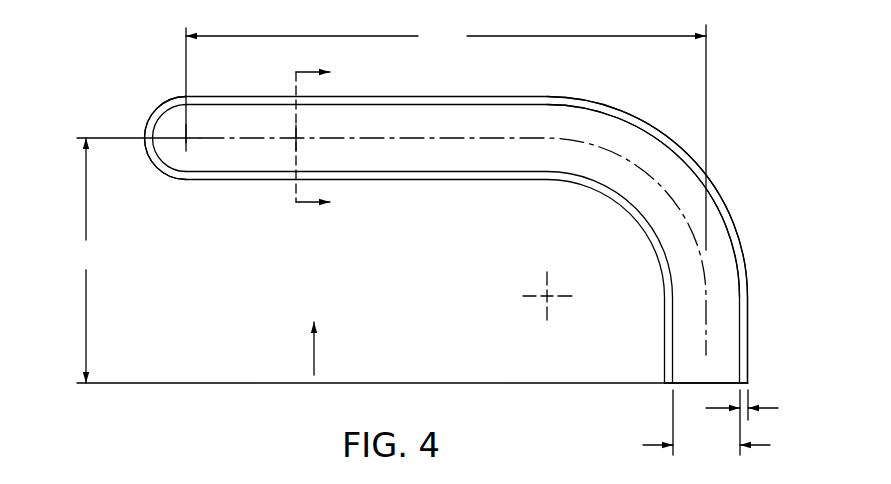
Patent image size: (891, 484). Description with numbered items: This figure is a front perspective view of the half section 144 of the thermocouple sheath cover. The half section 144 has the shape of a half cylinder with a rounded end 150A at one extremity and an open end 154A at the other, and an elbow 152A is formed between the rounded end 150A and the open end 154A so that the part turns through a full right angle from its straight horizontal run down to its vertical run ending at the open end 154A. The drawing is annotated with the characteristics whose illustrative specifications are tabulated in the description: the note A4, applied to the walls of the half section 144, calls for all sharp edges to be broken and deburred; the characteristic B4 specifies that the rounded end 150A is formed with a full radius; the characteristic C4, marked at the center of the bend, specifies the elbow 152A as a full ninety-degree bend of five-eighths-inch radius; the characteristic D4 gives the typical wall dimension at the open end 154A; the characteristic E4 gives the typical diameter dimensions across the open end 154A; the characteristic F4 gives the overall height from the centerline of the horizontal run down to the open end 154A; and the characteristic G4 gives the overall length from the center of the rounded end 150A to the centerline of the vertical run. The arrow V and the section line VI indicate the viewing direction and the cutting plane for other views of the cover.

The half section 144 is at (795, 176).
The break and deburr characteristic A4 is at (446, 94).
The rounded end 150A is at (148, 128).
The full radius characteristic B4 is at (154, 107).
The elbow 152A is at (690, 157).
The open end 154A is at (746, 376).
The elbow radius characteristic C4 is at (655, 186).
The length characteristic G4 is at (446, 137).
The height characteristic F4 is at (86, 260).
The diameter characteristic E4 is at (691, 424).
The wall thickness characteristic D4 is at (759, 405).
The view direction arrow V is at (322, 348).
The section line VI is at (327, 137).